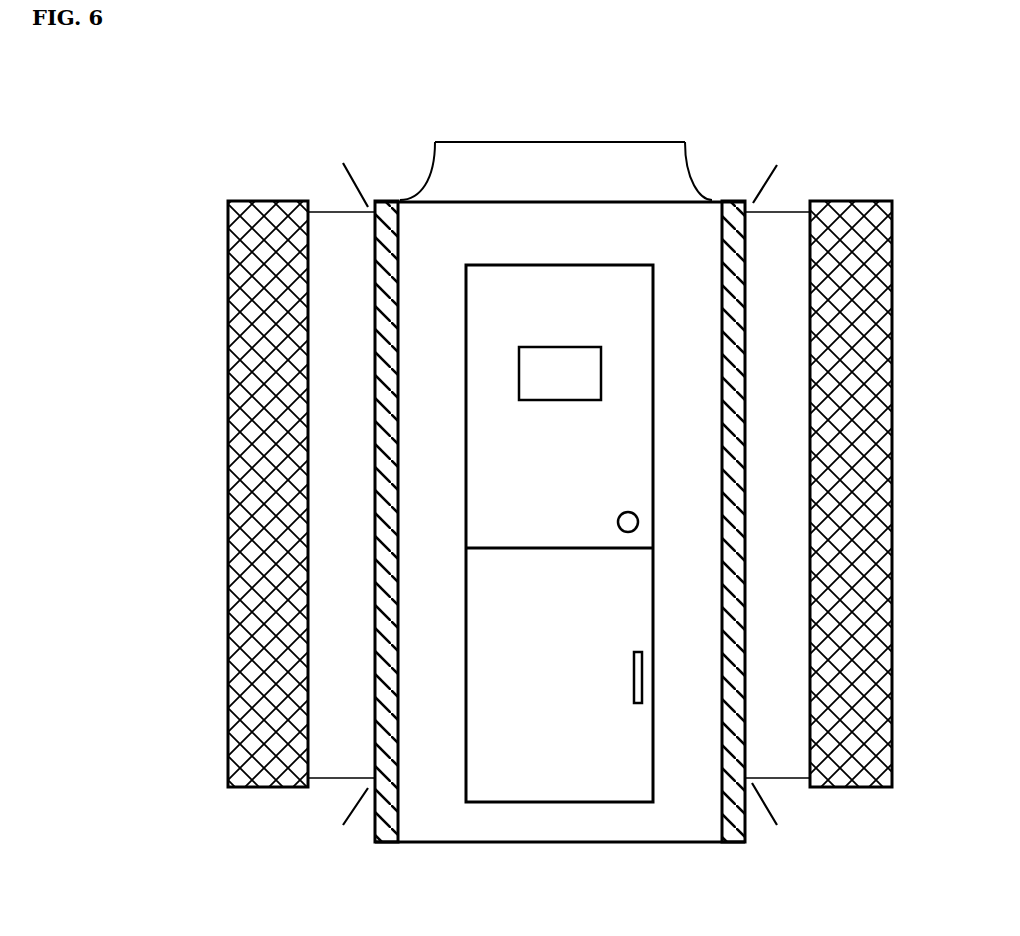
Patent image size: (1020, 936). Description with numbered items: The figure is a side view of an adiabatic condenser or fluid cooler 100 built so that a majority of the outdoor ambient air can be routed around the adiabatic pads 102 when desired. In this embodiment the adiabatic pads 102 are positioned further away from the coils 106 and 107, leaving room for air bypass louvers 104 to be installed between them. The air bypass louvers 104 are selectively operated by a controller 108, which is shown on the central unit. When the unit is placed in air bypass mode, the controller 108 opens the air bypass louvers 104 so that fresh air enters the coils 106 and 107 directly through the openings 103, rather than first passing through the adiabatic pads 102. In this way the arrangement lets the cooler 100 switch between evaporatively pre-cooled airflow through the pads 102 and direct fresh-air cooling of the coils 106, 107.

The adiabatic condenser or fluid cooler 100 is at (217, 172).
The adiabatic pads 102 is at (265, 272).
The openings 103 is at (777, 207).
The air bypass louvers 104 is at (360, 182).
The coil 106 is at (398, 777).
The coil 107 is at (723, 775).
The controller 108 is at (559, 533).